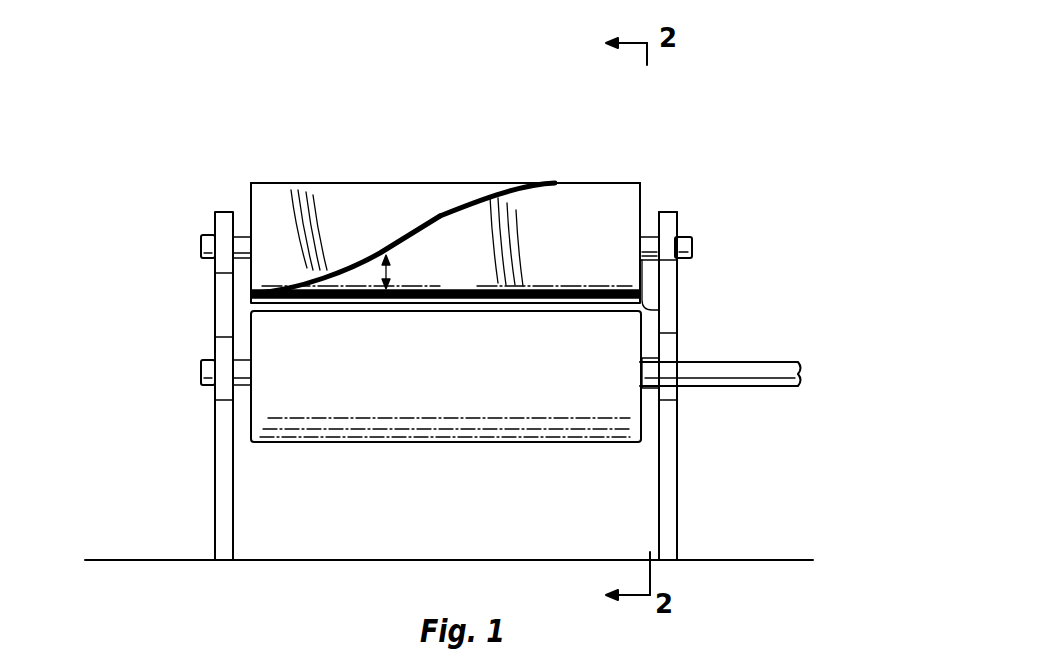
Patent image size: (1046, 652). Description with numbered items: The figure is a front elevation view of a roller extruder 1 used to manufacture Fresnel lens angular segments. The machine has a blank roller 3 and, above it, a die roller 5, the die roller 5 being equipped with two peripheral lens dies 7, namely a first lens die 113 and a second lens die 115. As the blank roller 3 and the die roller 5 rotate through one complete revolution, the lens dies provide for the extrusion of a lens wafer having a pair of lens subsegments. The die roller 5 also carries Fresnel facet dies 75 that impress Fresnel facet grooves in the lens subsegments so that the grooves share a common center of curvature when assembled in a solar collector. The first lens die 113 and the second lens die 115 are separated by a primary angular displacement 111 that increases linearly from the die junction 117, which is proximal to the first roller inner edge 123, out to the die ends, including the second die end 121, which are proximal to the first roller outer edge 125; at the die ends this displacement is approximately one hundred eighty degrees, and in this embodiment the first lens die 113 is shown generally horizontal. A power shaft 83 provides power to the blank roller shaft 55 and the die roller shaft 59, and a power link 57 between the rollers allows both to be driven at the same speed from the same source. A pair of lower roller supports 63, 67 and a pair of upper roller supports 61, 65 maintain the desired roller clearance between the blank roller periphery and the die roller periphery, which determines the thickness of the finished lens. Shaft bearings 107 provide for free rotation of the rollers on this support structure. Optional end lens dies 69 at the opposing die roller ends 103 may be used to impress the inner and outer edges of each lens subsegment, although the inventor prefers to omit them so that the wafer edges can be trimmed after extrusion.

The roller extruder 1 is at (597, 183).
The blank roller 3 is at (385, 442).
The die roller 5 is at (287, 183).
The peripheral lens dies 7 is at (442, 217).
The blank roller shaft 55 is at (650, 388).
The power link 57 is at (668, 333).
The die roller shaft 59 is at (655, 212).
The upper roller support 61 is at (213, 320).
The lower roller support 63 is at (215, 500).
The upper roller support 65 is at (672, 290).
The lower roller support 67 is at (668, 497).
The end lens dies 69 is at (250, 193).
The Fresnel facet dies 75 is at (325, 212).
The power shaft 83 is at (740, 370).
The die roller ends 103 is at (251, 183).
The shaft bearings 107 is at (207, 360).
The primary angular displacement 111 is at (387, 252).
The first lens die 113 is at (465, 290).
The second lens die 115 is at (473, 290).
The die junction 117 is at (250, 297).
The second die end 121 is at (678, 307).
The first roller inner edge 123 is at (250, 200).
The first roller outer edge 125 is at (650, 278).